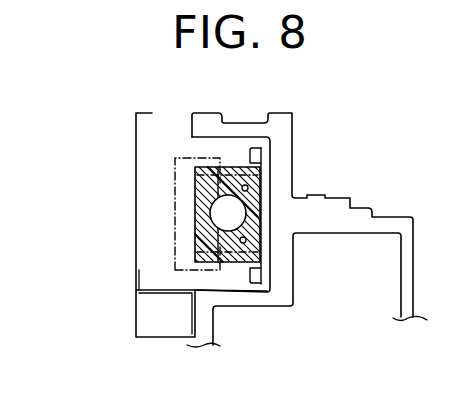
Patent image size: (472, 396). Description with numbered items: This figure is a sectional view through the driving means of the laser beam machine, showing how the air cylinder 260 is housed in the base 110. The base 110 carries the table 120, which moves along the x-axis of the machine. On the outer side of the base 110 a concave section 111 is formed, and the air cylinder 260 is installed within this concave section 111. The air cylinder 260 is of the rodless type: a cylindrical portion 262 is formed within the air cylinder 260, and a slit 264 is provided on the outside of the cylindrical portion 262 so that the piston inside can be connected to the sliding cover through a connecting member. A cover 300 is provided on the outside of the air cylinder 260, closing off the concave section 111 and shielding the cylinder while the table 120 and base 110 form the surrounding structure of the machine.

The cover 300 is at (134, 143).
The table 120 is at (273, 128).
The air cylinder 260 is at (217, 238).
The cylindrical portion 262 is at (200, 203).
The slit 264 is at (220, 208).
The concave section 111 is at (240, 303).
The base 110 is at (327, 222).